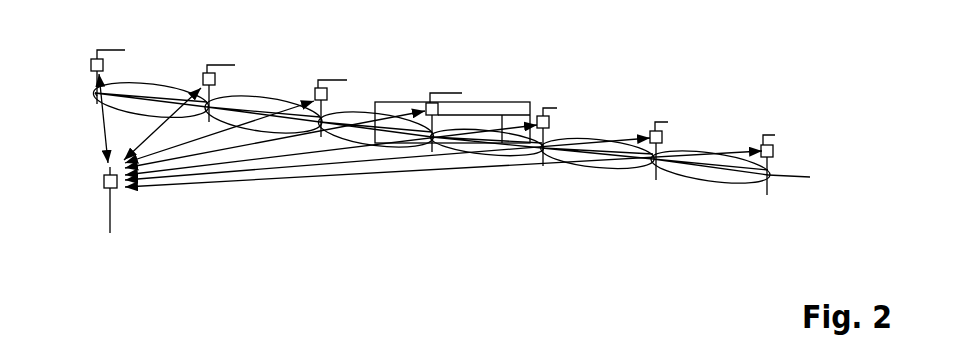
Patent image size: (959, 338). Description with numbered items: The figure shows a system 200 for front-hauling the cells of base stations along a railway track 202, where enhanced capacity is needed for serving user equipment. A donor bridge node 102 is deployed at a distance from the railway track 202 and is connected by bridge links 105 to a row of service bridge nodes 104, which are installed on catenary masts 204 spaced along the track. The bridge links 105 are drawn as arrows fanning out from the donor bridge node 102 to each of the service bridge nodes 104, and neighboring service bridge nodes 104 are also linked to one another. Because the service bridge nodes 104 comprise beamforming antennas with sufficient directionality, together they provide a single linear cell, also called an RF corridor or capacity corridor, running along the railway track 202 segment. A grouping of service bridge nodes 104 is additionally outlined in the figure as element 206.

The donor bridge node 102 is at (103, 181).
The service bridge nodes 104 is at (775, 147).
The bridge links 105 is at (293, 183).
The system 200 is at (431, 164).
The railway track 202 is at (810, 177).
The catenary masts 204 is at (95, 93).
The node cluster 206 is at (487, 112).